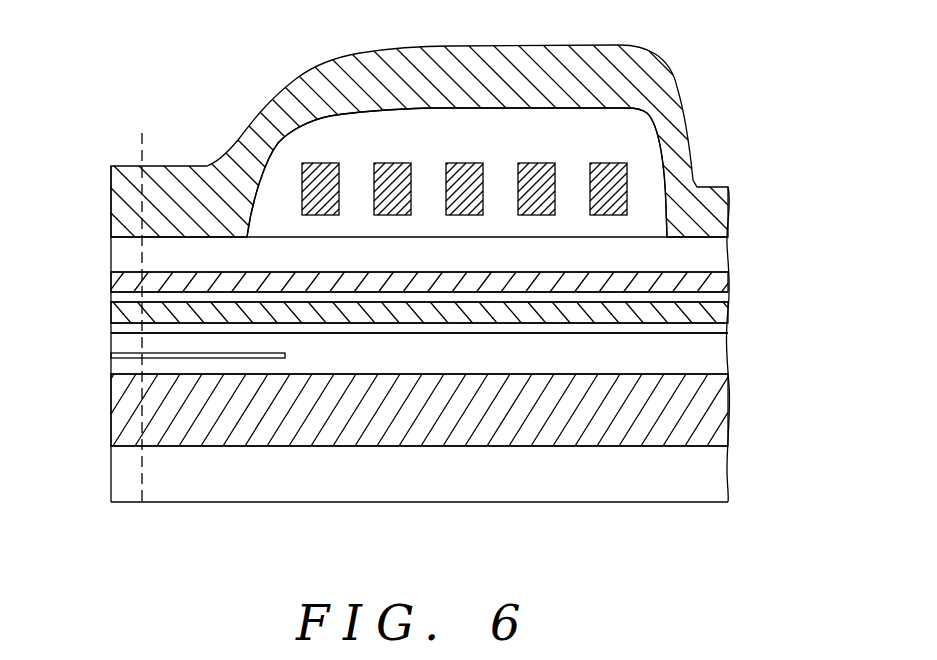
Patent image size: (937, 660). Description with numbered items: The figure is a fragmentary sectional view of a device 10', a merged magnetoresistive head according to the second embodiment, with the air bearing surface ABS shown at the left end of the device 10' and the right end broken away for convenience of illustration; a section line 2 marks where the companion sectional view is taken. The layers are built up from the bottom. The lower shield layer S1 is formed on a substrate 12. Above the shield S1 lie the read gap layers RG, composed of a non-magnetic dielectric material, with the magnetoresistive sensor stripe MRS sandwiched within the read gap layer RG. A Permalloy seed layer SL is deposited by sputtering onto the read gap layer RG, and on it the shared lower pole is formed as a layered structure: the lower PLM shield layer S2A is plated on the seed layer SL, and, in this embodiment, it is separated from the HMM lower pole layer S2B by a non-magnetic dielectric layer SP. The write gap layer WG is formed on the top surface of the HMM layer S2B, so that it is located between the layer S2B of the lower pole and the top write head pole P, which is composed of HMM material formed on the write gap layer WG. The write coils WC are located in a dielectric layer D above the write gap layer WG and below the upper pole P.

The device 10' is at (468, 301).
The write head pole P is at (710, 200).
The dielectric layer D is at (296, 150).
The write coils WC is at (536, 177).
The write gap layer WG is at (715, 258).
The HMM lower pole layer S2B is at (717, 288).
The non-magnetic dielectric layer SP is at (713, 300).
The PLM shield layer S2A is at (713, 313).
The seed layer SL is at (713, 328).
The read gap layer RG is at (710, 363).
The shield layer S1 is at (713, 417).
The substrate 12 is at (720, 475).
The magnetoresistive sensor stripe MRS is at (112, 356).
The air bearing surface ABS is at (63, 218).
The line 2– 2 is at (140, 130).